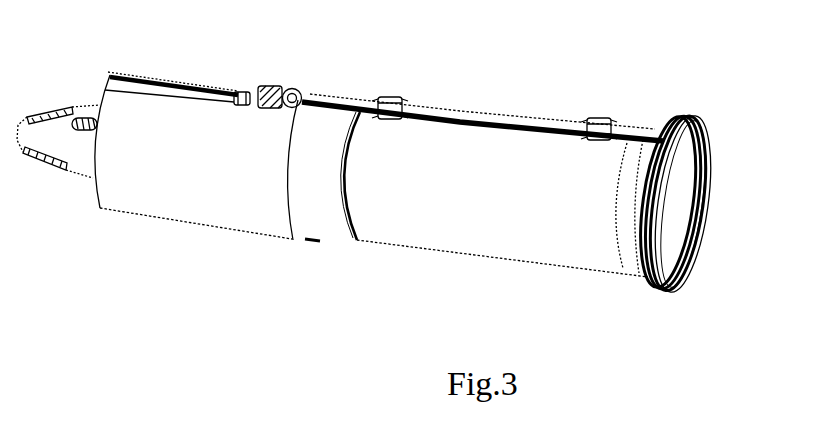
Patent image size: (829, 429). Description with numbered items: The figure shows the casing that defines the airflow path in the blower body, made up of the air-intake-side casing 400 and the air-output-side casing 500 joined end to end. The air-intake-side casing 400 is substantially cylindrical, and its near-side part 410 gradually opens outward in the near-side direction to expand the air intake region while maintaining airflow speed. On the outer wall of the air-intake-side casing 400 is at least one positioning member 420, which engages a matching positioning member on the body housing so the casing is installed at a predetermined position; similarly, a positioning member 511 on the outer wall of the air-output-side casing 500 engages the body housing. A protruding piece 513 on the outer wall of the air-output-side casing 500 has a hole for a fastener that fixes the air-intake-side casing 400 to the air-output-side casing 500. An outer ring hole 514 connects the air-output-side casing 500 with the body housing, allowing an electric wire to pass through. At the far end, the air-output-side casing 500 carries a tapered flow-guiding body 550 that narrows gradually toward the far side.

The air-intake-side casing 400 is at (520, 243).
The near-side part 410 is at (697, 168).
The positioning member 420 is at (400, 101).
The air-output-side casing 500 is at (217, 203).
The positioning member 511 is at (283, 87).
The protruding piece 513 is at (312, 239).
The outer ring hole 514 is at (244, 93).
The tapered flow-guiding body 550 is at (87, 108).